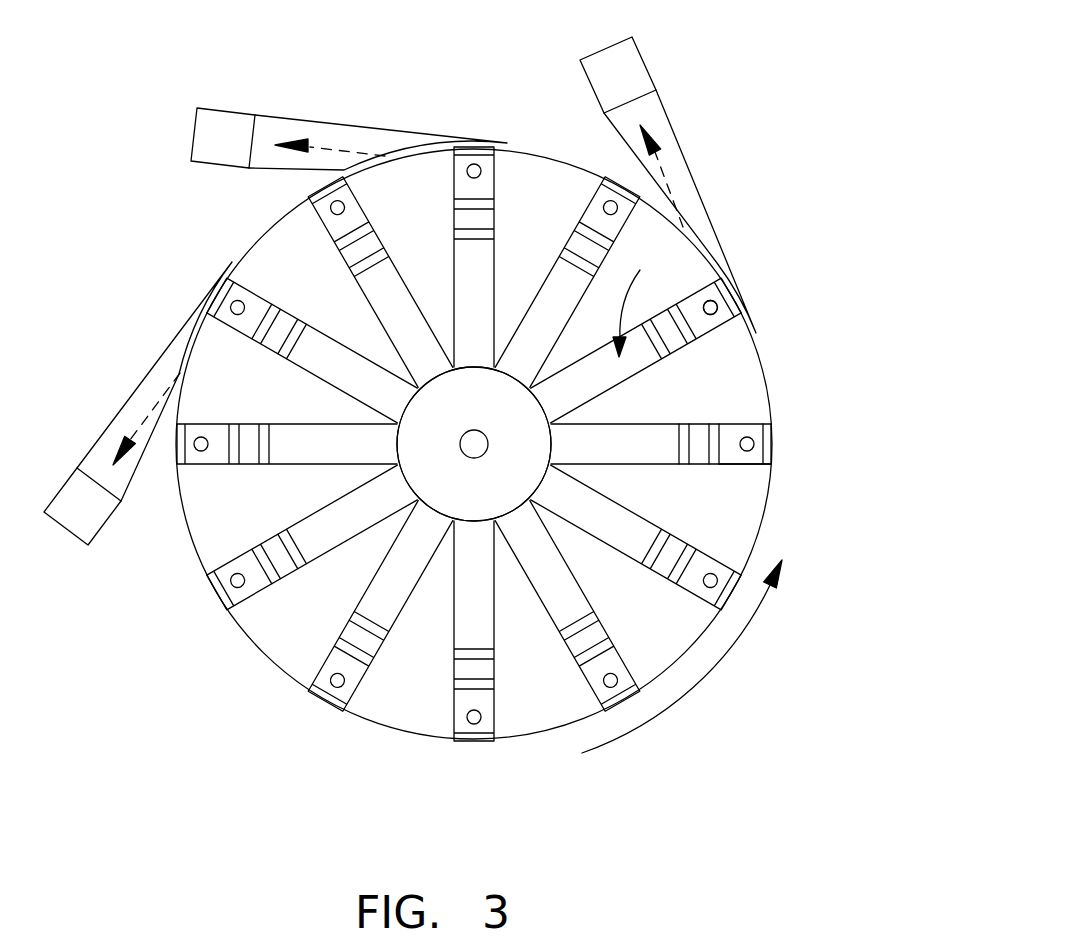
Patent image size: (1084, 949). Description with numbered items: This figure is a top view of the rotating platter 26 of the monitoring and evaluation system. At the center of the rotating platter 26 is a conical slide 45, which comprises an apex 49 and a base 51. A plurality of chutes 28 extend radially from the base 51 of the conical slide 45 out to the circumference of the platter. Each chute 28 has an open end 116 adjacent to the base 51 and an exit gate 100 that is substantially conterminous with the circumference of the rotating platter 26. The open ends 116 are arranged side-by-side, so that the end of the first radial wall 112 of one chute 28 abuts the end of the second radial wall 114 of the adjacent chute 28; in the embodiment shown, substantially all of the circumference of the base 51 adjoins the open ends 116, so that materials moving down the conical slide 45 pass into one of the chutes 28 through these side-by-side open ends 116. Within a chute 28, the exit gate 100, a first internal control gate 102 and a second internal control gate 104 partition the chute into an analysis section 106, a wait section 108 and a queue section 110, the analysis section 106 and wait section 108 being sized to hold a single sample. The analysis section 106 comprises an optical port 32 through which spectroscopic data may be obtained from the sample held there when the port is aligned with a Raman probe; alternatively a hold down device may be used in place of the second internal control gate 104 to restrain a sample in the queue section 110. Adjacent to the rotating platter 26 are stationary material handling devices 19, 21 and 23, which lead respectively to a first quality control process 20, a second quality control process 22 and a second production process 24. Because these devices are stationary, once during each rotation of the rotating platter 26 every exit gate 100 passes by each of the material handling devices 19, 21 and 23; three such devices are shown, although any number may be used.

The material handling device 19 is at (323, 138).
The first quality control process 20 is at (222, 125).
The material handling device 21 is at (677, 173).
The second quality control process 22 is at (627, 65).
The material handling device 23 is at (130, 422).
The second production process 24 is at (67, 502).
The rotating platter 26 is at (190, 540).
The chute 28 is at (682, 499).
The optical port 32 is at (754, 440).
The conical slide 45 is at (495, 483).
The apex 49 is at (410, 493).
The base 51 is at (475, 444).
The exit gate 100 is at (767, 427).
The first internal control gate 102 is at (720, 462).
The second internal control gate 104 is at (687, 428).
The analysis section 106 is at (750, 452).
The wait section 108 is at (702, 430).
The queue section 110 is at (665, 430).
The first radial wall 112 is at (607, 463).
The second radial wall 114 is at (604, 423).
The open end 116 is at (547, 443).